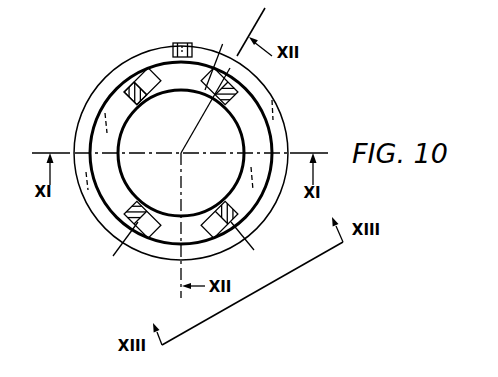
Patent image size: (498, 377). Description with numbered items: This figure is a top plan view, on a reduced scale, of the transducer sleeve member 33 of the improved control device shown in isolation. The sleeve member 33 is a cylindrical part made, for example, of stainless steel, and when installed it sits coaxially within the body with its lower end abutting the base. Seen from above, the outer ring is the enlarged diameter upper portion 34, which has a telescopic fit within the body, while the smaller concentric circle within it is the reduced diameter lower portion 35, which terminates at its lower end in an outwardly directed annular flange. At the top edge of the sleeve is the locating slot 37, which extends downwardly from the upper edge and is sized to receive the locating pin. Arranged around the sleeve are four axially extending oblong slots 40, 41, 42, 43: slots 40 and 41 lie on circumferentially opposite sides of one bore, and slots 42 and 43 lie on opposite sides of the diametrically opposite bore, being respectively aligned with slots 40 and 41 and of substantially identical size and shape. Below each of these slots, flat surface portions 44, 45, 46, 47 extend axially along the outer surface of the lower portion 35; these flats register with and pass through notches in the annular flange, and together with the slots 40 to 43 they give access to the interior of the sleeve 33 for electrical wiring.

The transducer sleeve member 33 is at (78, 124).
The enlarged diameter upper portion 34 is at (284, 129).
The reduced diameter lower portion 35 is at (241, 179).
The locating slot 37 is at (172, 48).
The oblong slot 40 is at (128, 95).
The oblong slot 41 is at (233, 96).
The oblong slot 42 is at (238, 224).
The oblong slot 43 is at (123, 211).
The flat surface portion 44 is at (142, 79).
The flat surface portion 45 is at (211, 55).
The flat surface portion 46 is at (255, 245).
The flat surface portion 47 is at (113, 249).